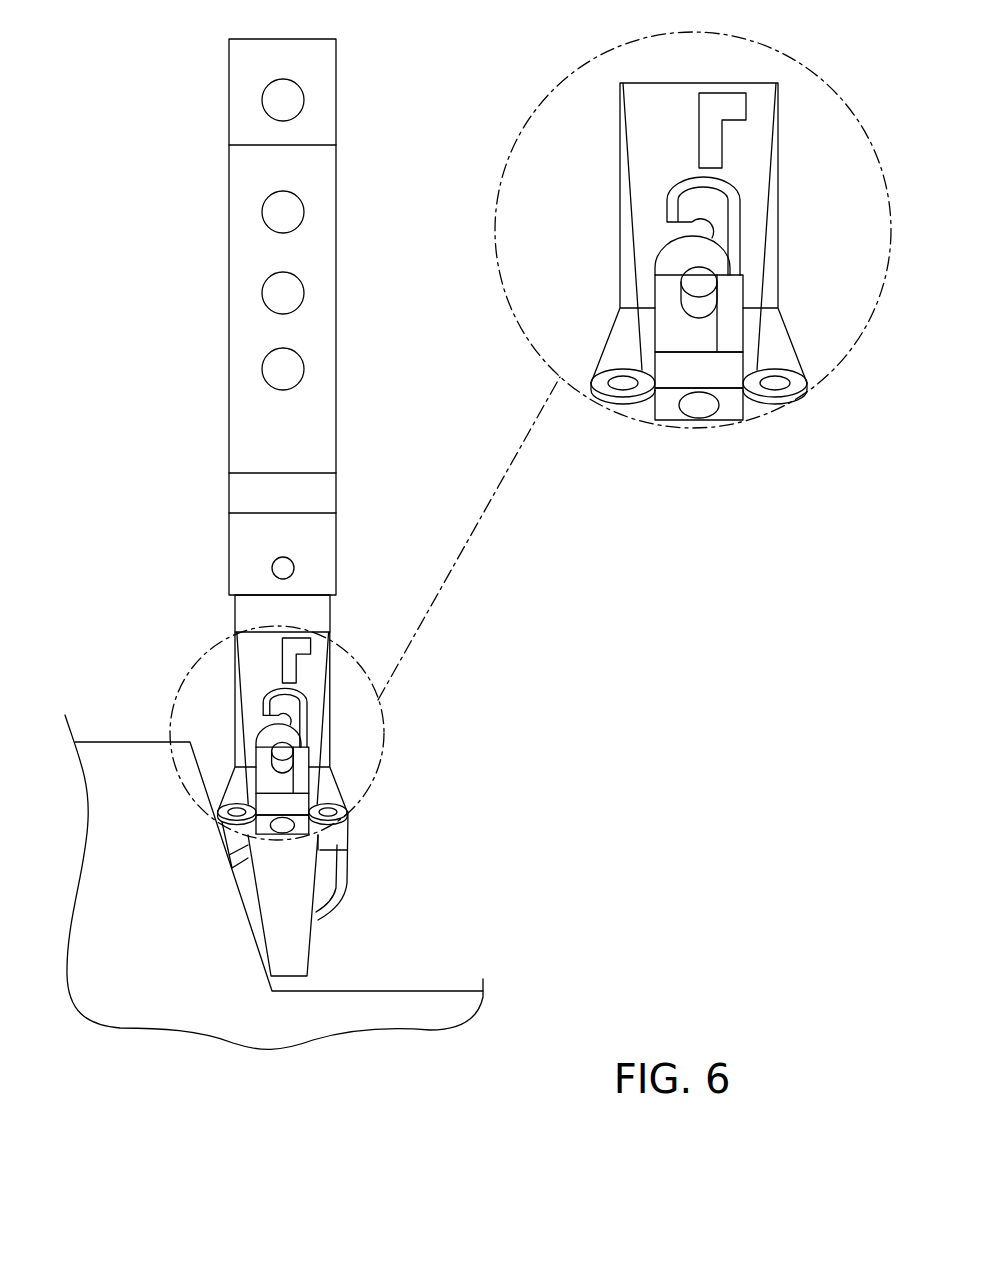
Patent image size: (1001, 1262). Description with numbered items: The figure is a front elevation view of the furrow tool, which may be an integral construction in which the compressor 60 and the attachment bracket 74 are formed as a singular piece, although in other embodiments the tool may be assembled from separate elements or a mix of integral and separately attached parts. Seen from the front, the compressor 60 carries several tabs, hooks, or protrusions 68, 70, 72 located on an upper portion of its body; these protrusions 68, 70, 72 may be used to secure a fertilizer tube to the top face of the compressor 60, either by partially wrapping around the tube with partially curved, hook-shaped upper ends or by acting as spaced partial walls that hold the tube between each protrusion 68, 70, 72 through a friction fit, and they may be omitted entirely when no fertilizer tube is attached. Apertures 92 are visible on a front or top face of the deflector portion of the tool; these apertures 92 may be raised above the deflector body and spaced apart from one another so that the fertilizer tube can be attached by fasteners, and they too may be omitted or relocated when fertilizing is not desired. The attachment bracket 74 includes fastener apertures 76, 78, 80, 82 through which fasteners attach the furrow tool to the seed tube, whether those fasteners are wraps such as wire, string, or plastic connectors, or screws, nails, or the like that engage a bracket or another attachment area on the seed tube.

The compressor 60 is at (288, 935).
The protrusion 68 is at (732, 333).
The protrusion 70 is at (680, 257).
The protrusion 72 is at (723, 208).
The attachment bracket 74 is at (237, 317).
The fastener aperture 76 is at (262, 100).
The fastener aperture 78 is at (262, 212).
The fastener aperture 80 is at (262, 293).
The fastener aperture 82 is at (262, 369).
The aperture 92 is at (765, 383).